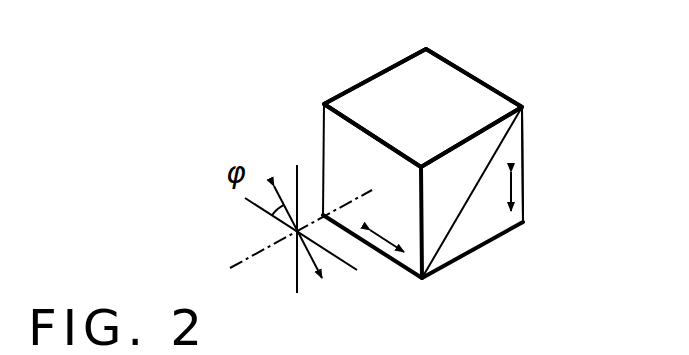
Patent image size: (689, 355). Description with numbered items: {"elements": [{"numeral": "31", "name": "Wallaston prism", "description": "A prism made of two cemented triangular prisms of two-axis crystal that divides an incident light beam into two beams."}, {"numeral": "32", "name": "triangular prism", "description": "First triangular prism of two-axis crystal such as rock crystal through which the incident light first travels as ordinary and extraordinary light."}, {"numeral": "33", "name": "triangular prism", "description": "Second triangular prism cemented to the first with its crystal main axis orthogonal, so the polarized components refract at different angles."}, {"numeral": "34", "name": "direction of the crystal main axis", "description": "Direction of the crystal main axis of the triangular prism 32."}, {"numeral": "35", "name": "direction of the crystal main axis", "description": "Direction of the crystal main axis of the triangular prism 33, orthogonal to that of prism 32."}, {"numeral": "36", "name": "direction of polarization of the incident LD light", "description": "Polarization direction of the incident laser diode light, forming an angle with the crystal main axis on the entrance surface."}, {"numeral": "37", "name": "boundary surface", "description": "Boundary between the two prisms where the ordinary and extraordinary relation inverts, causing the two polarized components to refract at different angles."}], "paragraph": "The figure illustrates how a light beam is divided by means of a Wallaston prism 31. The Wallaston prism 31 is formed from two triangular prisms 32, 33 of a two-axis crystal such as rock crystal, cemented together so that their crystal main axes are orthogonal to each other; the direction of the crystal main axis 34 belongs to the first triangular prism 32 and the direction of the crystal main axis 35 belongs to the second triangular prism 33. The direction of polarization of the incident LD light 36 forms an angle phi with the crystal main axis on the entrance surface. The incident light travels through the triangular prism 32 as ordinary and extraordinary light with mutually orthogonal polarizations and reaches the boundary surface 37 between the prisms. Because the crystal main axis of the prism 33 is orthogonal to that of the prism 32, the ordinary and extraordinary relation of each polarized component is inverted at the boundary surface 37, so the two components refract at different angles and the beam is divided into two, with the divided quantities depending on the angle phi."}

The crystal block 31 is at (362, 73).
The top face 32 is at (472, 100).
The side face 33 is at (478, 240).
The vibration direction arrow 34 is at (392, 226).
The vertical direction arrow 35 is at (491, 196).
The tilted axis arrow 36 is at (312, 251).
The diagonal line 37 is at (513, 140).